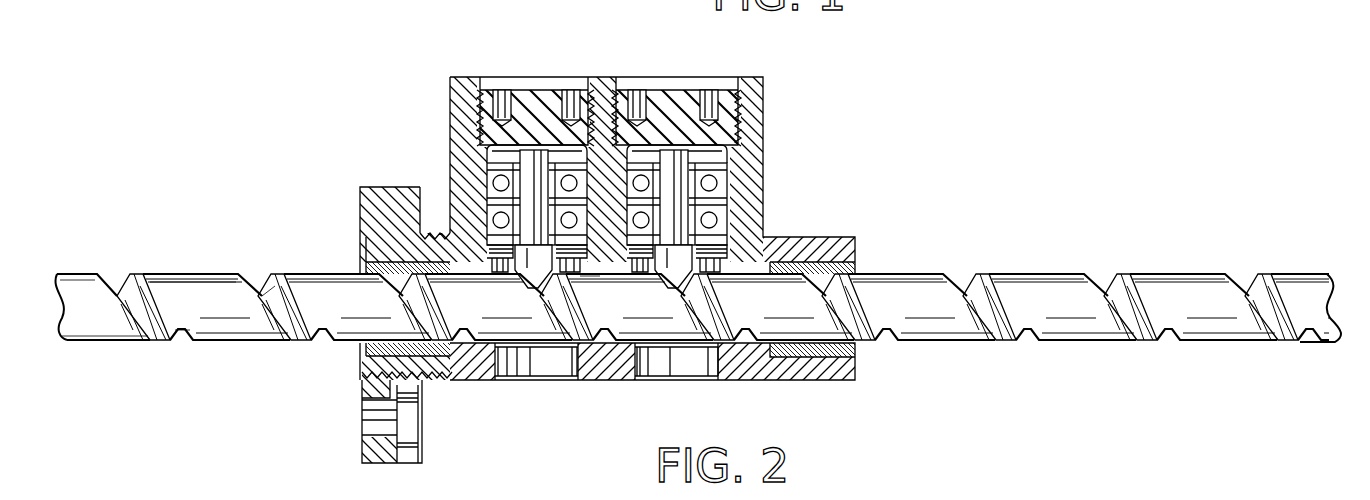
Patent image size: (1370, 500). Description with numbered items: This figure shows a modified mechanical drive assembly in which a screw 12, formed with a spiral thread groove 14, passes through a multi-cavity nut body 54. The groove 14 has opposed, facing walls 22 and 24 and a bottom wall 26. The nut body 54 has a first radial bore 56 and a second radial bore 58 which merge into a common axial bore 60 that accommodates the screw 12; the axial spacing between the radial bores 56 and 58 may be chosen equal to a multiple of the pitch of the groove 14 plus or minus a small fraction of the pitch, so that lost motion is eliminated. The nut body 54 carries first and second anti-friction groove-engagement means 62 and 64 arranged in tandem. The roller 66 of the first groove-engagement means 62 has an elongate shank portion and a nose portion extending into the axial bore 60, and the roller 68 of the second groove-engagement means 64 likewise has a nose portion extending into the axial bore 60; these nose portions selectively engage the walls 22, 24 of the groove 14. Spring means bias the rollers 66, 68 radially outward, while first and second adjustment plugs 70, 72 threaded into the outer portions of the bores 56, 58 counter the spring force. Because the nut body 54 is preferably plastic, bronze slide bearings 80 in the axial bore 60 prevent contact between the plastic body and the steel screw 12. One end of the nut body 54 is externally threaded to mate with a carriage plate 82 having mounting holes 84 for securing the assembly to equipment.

The screw 12 is at (712, 300).
The spiral thread groove 14 is at (112, 276).
The groove wall 22 is at (232, 274).
The groove wall 24 is at (266, 282).
The bottom wall 26 is at (175, 332).
The nut body 54 is at (752, 133).
The first radial bore 56 is at (496, 229).
The second radial bore 58 is at (714, 229).
The axial bore 60 is at (594, 276).
The first anti-friction groove-engagement means 62 is at (534, 78).
The second anti-friction groove-engagement means 64 is at (677, 78).
The roller 66 is at (527, 278).
The roller 68 is at (668, 277).
The first adjustment plug 70 is at (514, 37).
The second adjustment plug 72 is at (686, 95).
The slide bearings 80 is at (362, 347).
The carriage plate 82 is at (362, 396).
The mounting holes 84 is at (362, 437).